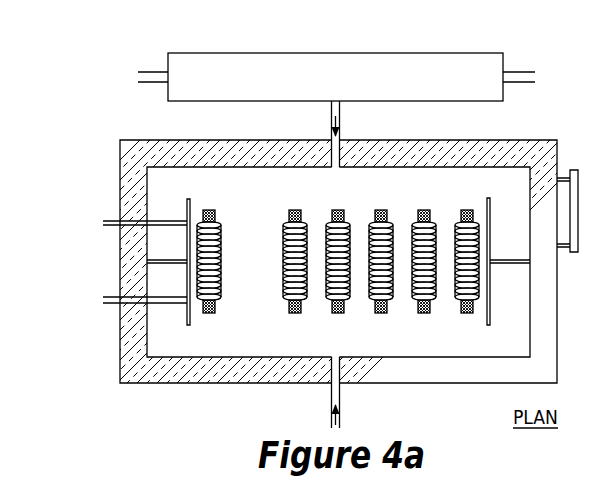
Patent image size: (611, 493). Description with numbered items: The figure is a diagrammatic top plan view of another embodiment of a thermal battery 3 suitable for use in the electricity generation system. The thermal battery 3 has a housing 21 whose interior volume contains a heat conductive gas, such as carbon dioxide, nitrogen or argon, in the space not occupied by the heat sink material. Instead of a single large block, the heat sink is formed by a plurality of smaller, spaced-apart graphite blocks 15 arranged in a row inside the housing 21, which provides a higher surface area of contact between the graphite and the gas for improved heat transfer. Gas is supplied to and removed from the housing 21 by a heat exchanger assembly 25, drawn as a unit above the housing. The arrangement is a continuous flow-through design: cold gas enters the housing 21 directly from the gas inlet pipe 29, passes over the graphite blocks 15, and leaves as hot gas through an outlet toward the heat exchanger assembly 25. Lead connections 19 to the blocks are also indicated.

The thermal battery 3 is at (90, 338).
The graphite block 15 is at (205, 314).
The coil assembly / lead connections 19 is at (205, 230).
The housing 21 is at (342, 121).
The heat exchanger assembly 25 is at (515, 41).
The cold gas inlet tube 29 is at (341, 398).